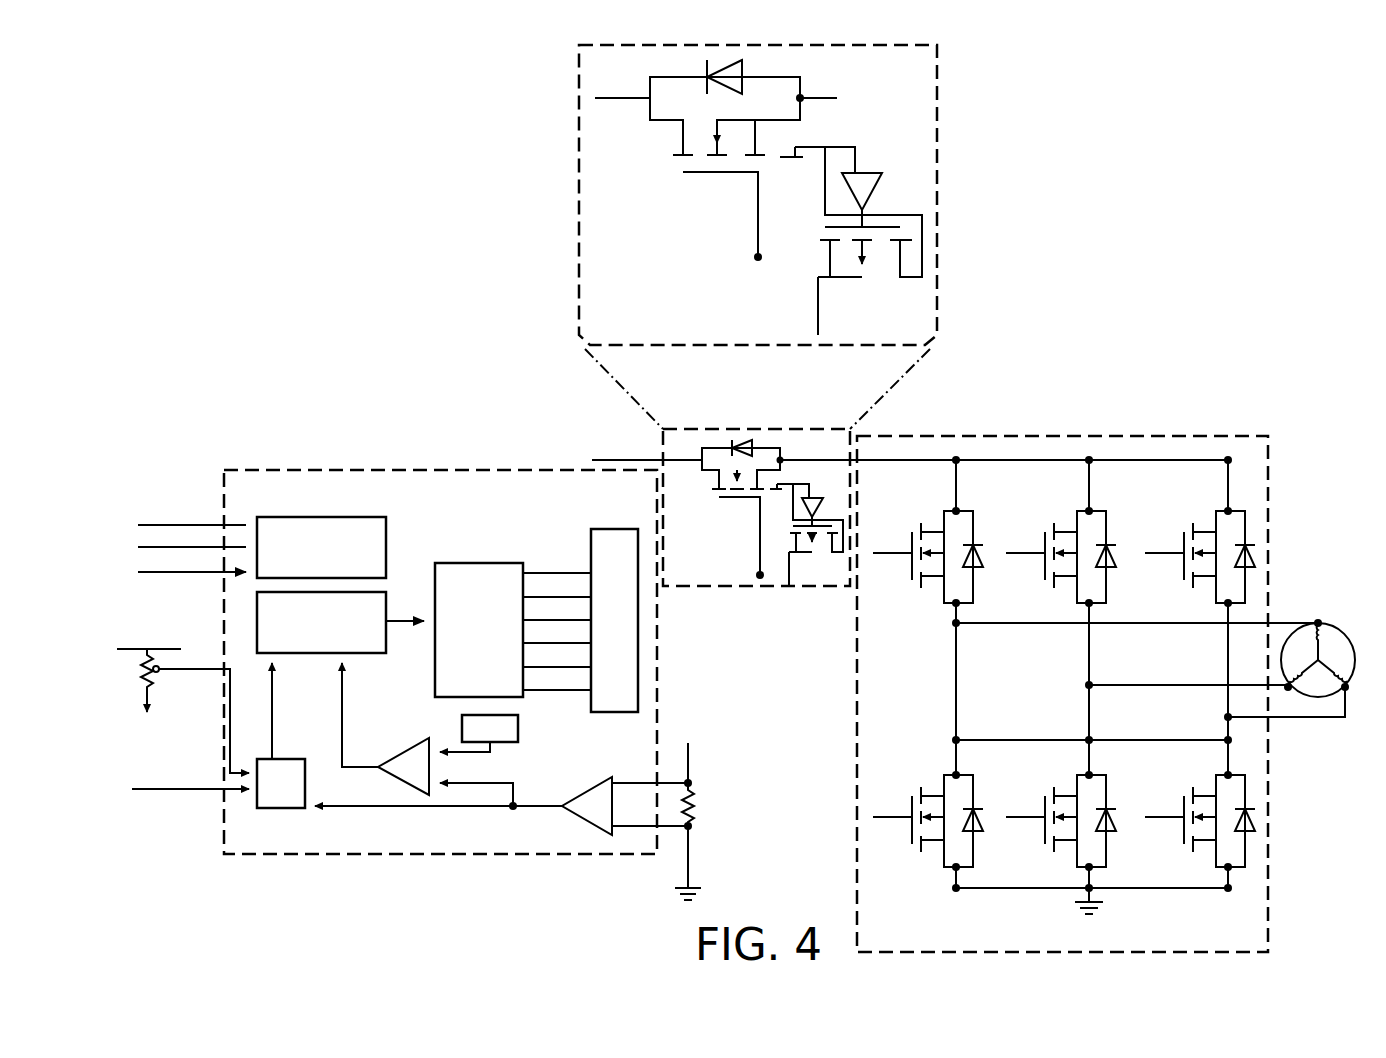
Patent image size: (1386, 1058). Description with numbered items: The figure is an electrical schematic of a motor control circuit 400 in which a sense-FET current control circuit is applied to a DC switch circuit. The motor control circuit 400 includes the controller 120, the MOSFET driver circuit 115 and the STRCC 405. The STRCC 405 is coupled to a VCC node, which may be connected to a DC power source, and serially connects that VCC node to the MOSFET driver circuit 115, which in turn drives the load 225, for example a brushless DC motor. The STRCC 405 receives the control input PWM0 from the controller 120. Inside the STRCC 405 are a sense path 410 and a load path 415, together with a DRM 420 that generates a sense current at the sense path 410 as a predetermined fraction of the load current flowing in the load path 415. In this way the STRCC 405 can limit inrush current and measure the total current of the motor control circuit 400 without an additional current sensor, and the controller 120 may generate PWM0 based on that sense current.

The motor control circuit 400 is at (350, 318).
The STRCC 405 is at (708, 586).
The sense path 410 is at (805, 257).
The load path 415 is at (898, 90).
The DRM 420 is at (932, 178).
The controller 120 is at (443, 508).
The MOSFET driver circuit 115 is at (898, 946).
The load 225 is at (1316, 622).